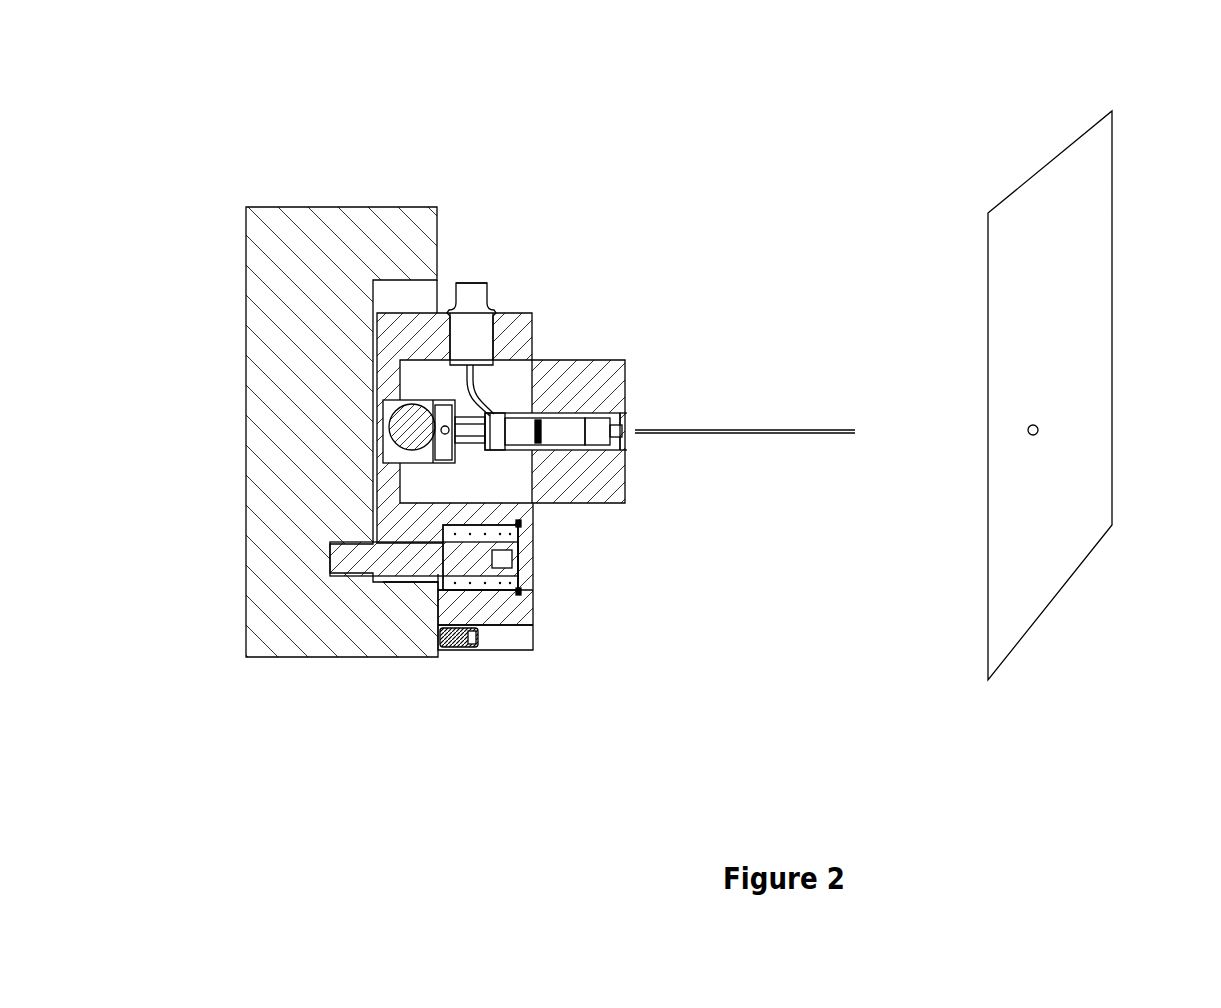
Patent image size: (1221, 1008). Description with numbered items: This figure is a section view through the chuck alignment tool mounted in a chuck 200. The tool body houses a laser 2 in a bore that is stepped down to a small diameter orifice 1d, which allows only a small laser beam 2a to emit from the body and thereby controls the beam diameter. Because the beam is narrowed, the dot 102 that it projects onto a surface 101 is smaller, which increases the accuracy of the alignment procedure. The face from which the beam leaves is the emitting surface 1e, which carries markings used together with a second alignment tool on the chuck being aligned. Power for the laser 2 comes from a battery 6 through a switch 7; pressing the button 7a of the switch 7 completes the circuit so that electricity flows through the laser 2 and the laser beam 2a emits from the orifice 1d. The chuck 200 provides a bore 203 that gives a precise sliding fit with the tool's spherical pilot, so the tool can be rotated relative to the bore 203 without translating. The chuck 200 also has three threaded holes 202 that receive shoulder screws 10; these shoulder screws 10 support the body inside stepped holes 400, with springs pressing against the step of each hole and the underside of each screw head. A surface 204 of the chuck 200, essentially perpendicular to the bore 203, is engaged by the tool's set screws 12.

The chuck 200 is at (442, 192).
The laser 2 is at (629, 398).
The emitting surface 1e is at (639, 400).
The small diameter orifice 1d is at (637, 448).
The laser beam 2a is at (741, 421).
The switch 7 is at (497, 288).
The button 7a is at (463, 269).
The battery 6 is at (374, 433).
The threaded holes 202 is at (313, 568).
The shoulder screws 10 is at (467, 599).
The stepped holes 400 is at (485, 601).
The bore 203 is at (368, 603).
The surface 204 is at (435, 672).
The set screws 12 is at (459, 662).
The surface 101 is at (998, 191).
The dot 102 is at (1045, 408).